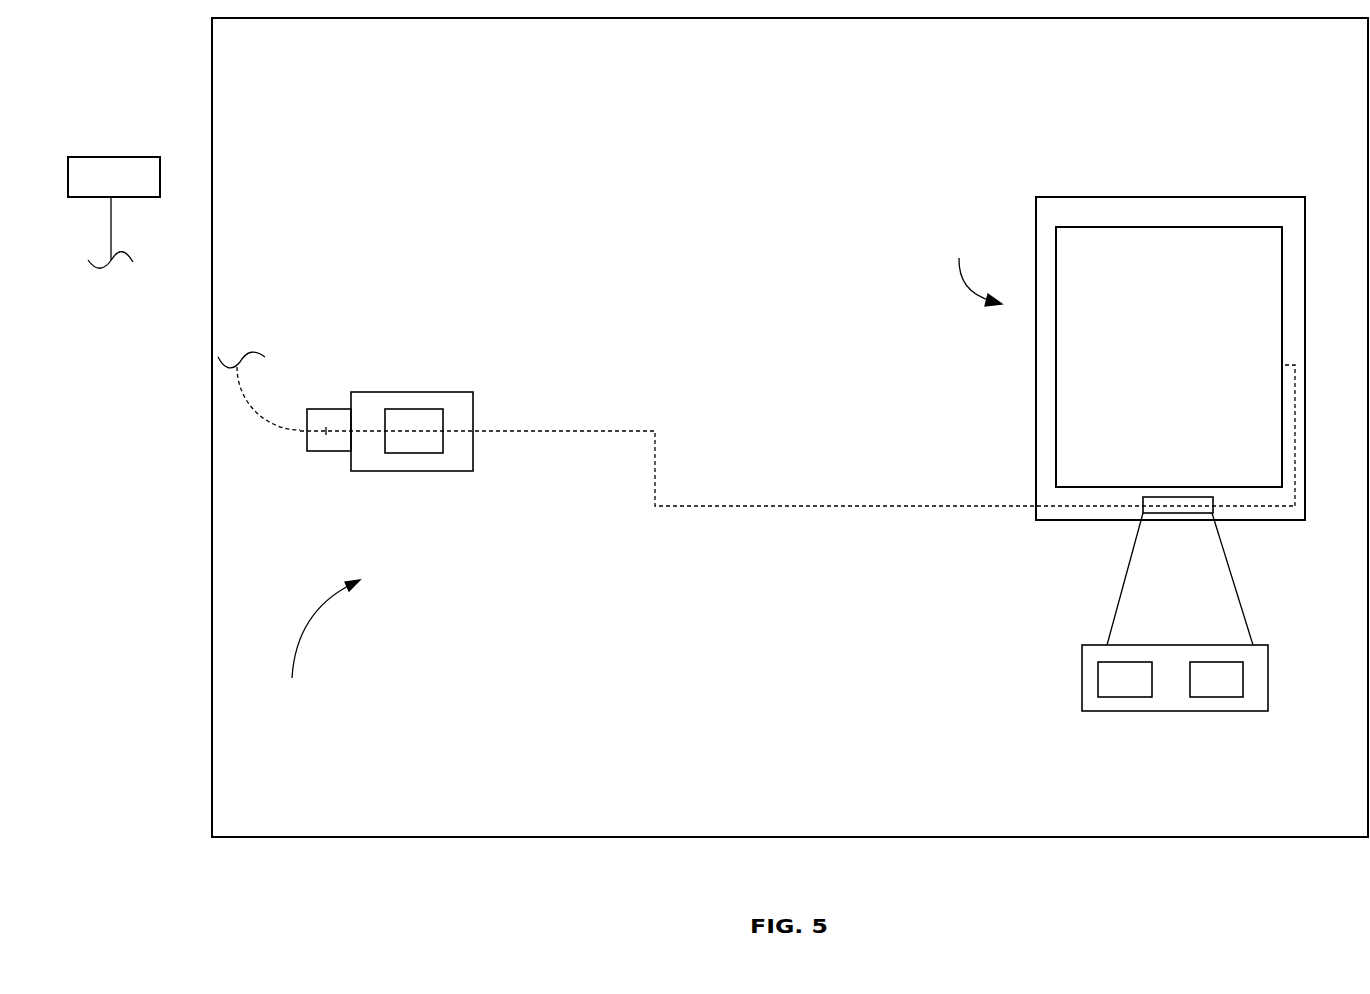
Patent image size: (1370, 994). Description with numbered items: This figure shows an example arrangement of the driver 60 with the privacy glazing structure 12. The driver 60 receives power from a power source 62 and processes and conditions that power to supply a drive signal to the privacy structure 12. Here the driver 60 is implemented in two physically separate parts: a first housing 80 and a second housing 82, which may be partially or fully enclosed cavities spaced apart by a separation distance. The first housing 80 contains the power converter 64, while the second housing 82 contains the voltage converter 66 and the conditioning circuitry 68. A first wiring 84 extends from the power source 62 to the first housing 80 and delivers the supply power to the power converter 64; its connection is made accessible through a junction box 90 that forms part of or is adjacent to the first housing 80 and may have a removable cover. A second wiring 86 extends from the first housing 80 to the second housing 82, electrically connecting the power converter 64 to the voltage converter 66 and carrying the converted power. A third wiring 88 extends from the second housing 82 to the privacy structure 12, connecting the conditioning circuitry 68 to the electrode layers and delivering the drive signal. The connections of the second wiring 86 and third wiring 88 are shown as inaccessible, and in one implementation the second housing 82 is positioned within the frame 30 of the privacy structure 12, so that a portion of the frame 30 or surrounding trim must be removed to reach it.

The privacy glazing structure 12 is at (1125, 358).
The frame 30 is at (1036, 402).
The driver 60 is at (319, 643).
The power source 62 is at (126, 187).
The power converter 64 is at (403, 442).
The voltage converter 66 is at (1113, 690).
The conditioning circuitry 68 is at (1228, 690).
The first housing 80 is at (422, 417).
The second housing 82 is at (1142, 577).
The first wiring 84 is at (263, 411).
The second wiring 86 is at (812, 506).
The third wiring 88 is at (1295, 461).
The junction box 90 is at (327, 409).